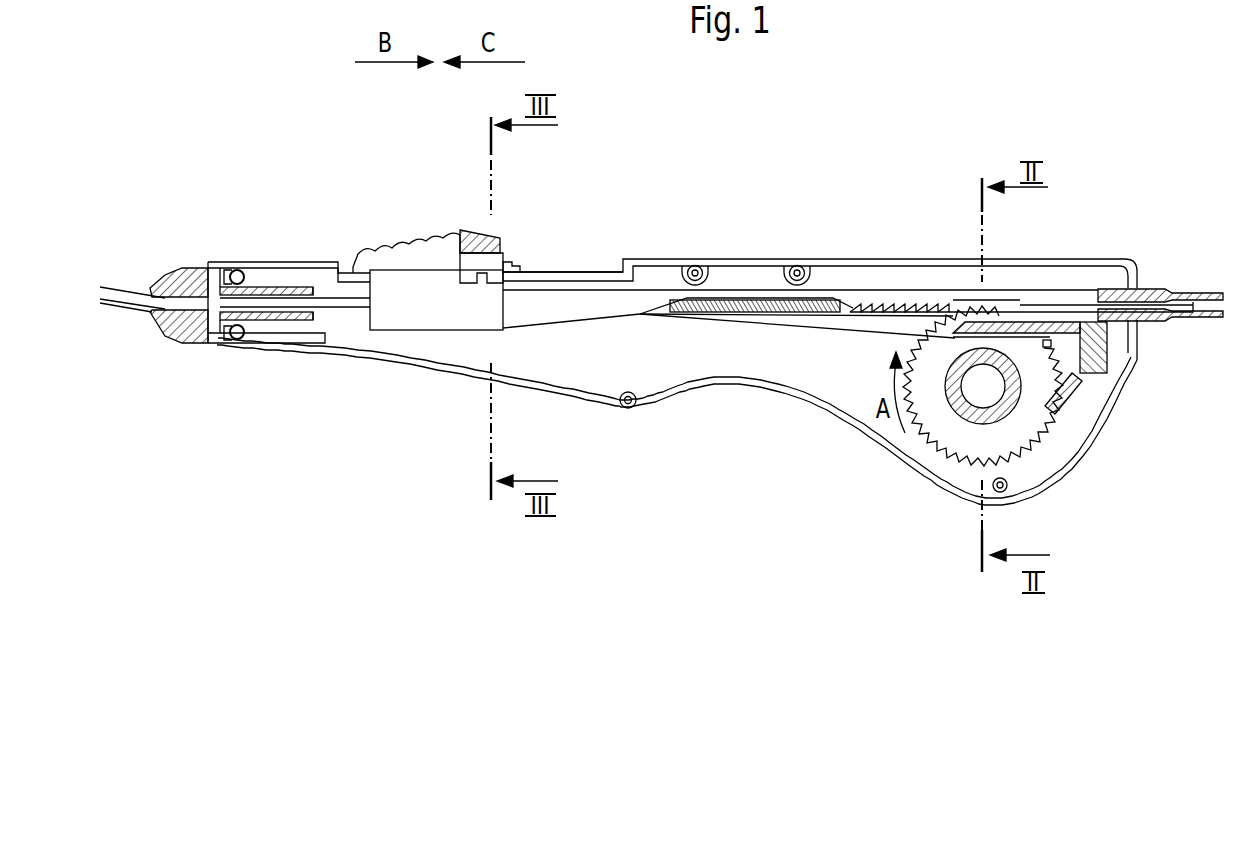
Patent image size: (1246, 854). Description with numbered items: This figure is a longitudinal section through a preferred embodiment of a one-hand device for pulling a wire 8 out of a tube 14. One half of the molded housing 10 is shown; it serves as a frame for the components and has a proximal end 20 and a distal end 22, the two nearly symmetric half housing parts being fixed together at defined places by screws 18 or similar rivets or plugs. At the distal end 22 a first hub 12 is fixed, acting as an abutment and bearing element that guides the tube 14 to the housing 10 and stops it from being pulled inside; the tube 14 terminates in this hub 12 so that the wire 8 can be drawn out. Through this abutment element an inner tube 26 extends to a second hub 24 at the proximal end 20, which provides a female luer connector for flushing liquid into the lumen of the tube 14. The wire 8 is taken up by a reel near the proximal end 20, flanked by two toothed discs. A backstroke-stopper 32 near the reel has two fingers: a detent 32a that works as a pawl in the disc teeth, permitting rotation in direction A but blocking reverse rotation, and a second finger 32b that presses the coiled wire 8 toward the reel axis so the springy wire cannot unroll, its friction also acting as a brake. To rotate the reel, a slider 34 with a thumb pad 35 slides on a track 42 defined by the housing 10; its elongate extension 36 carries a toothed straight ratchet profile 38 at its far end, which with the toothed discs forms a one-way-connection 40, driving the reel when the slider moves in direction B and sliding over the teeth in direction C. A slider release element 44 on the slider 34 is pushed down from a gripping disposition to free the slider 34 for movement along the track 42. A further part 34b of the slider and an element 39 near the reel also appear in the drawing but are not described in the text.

The wire 8 is at (323, 290).
The molded housing 10 is at (837, 258).
The first hub 12 is at (190, 277).
The tube 14 is at (130, 292).
The screws 18 is at (695, 265).
The proximal end 20 is at (1133, 260).
The distal end 22 is at (208, 348).
The second hub 24 is at (1200, 287).
The inner tube 26 is at (343, 313).
The backstroke-stopper 32 is at (1097, 343).
The detent 32a is at (1077, 390).
The second finger 32b is at (1000, 324).
The slider 34 is at (413, 317).
The slide block projection 34b is at (513, 260).
The thumb pad 35 is at (407, 231).
The elongate extension 36 is at (653, 297).
The toothed straight ratchet profile 38 is at (893, 300).
The blade guard 39 is at (1043, 430).
The one-way-connection 40 is at (968, 298).
The track 42 is at (593, 272).
The slider release element 44 is at (477, 230).